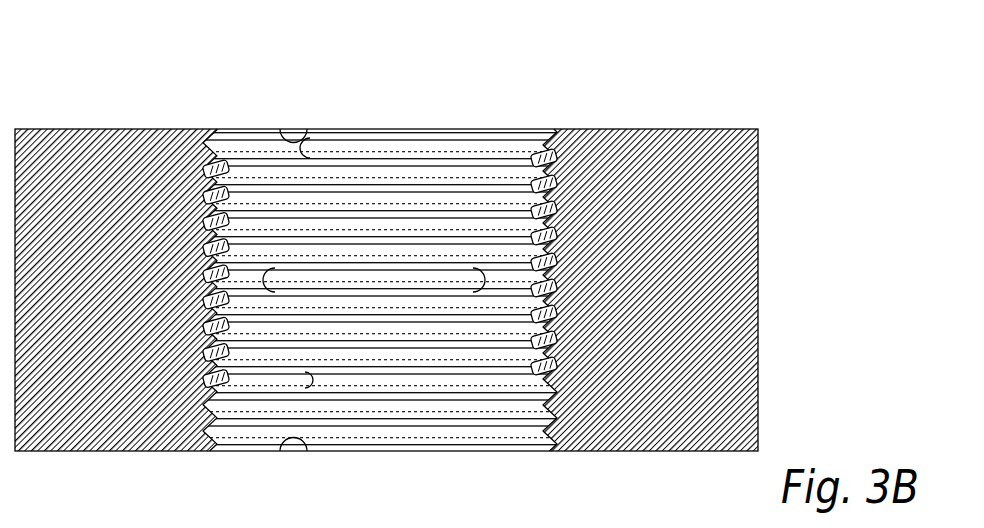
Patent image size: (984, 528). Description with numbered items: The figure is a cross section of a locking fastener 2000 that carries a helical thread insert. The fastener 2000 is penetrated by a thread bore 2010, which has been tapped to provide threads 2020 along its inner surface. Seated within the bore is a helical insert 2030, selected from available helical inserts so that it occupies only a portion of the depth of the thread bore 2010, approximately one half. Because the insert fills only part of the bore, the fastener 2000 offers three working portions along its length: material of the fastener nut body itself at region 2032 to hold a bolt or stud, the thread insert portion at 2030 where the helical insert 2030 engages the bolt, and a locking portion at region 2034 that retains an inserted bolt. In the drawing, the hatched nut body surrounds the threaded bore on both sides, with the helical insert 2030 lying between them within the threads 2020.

The fastener 2000 is at (643, 86).
The thread bore 2010 is at (325, 114).
The threads 2020 is at (548, 432).
The helical insert 2030 is at (418, 172).
The region 2032 is at (101, 155).
The region 2034 is at (670, 158).